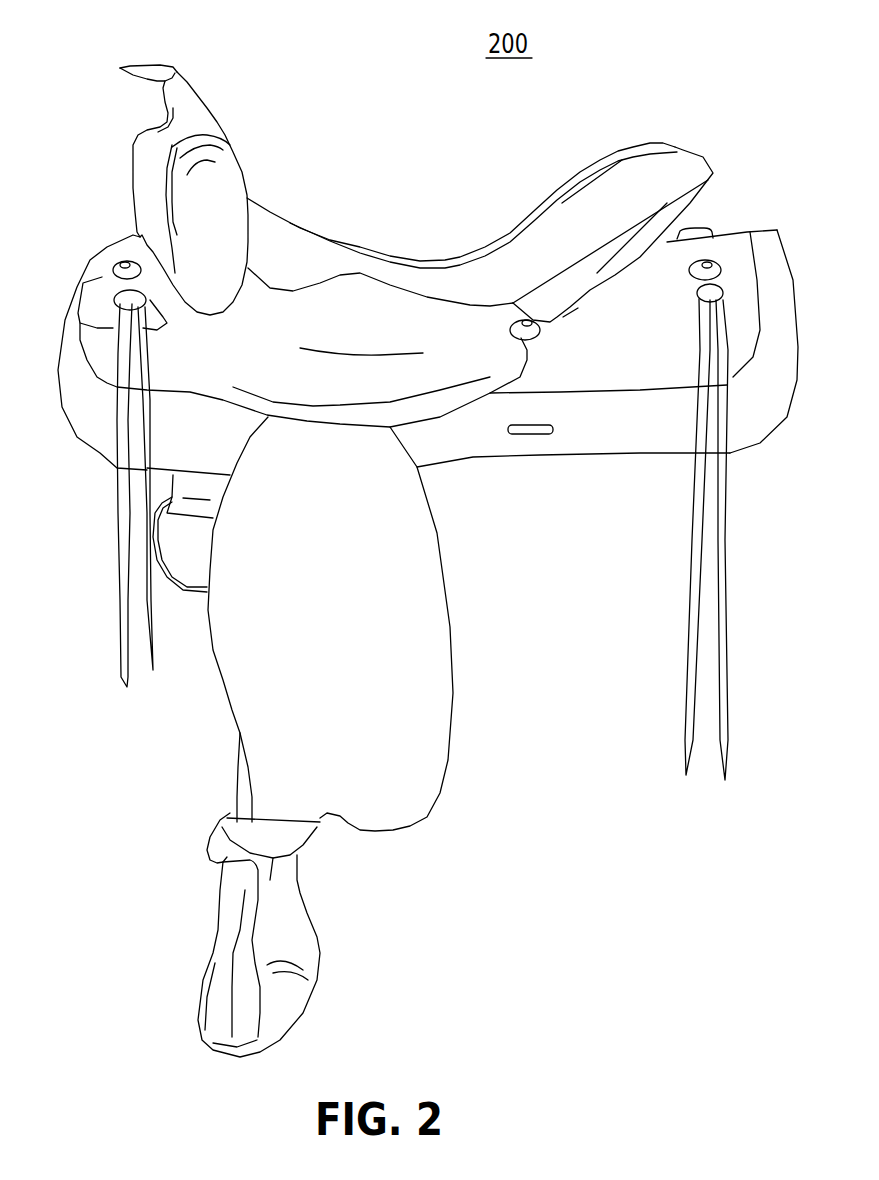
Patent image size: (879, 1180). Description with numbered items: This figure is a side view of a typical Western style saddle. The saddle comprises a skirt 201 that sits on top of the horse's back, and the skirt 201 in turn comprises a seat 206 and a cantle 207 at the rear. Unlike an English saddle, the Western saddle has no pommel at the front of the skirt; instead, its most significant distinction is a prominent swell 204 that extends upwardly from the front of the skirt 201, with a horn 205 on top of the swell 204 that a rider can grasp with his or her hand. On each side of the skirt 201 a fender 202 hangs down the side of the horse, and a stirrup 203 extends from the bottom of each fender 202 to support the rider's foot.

The skirt 201 is at (618, 440).
The fender 202 is at (413, 633).
The stirrup 203 is at (293, 998).
The swell 204 is at (217, 218).
The horn 205 is at (147, 63).
The seat 206 is at (419, 262).
The cantle 207 is at (685, 160).